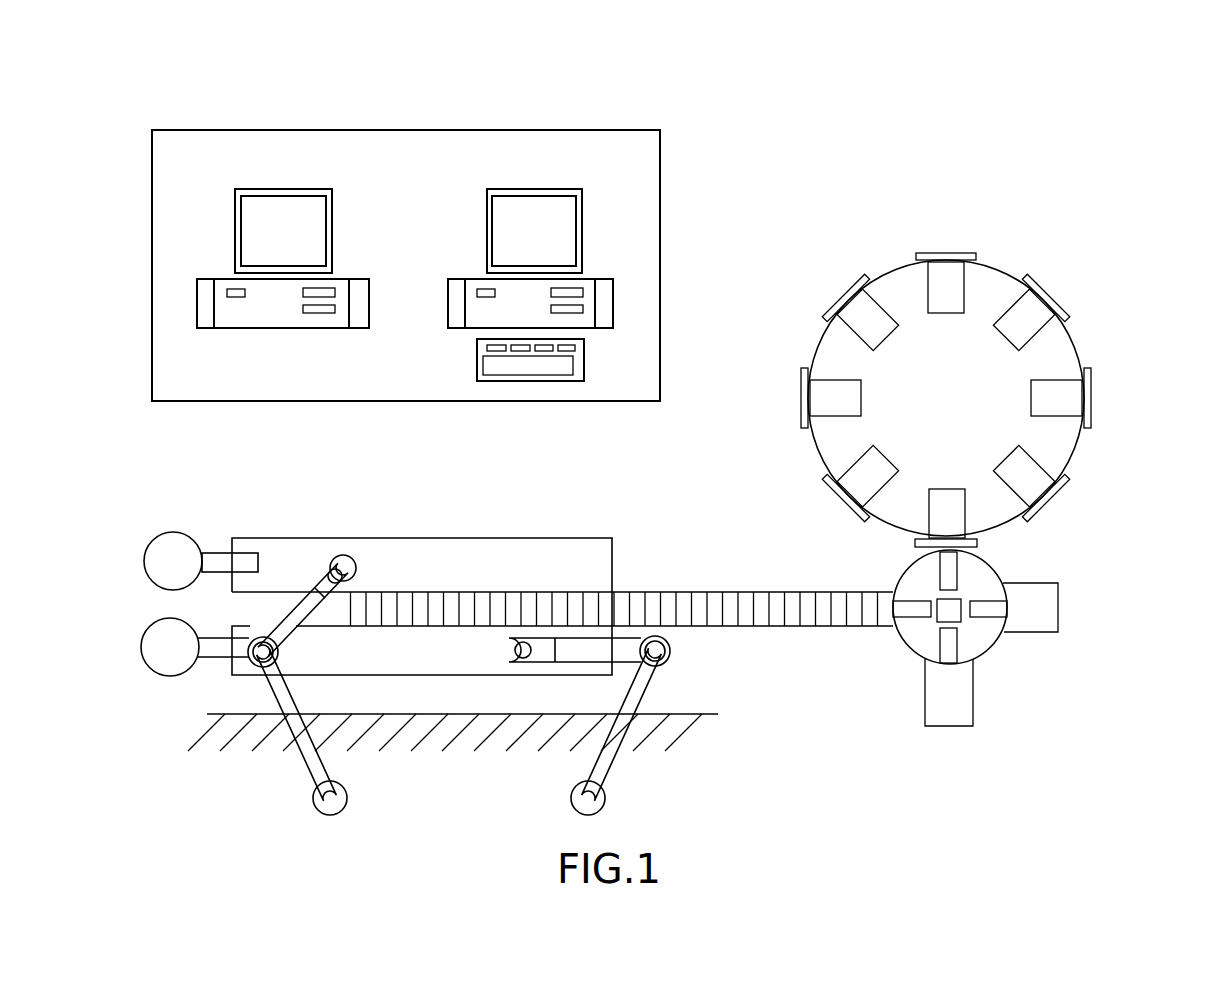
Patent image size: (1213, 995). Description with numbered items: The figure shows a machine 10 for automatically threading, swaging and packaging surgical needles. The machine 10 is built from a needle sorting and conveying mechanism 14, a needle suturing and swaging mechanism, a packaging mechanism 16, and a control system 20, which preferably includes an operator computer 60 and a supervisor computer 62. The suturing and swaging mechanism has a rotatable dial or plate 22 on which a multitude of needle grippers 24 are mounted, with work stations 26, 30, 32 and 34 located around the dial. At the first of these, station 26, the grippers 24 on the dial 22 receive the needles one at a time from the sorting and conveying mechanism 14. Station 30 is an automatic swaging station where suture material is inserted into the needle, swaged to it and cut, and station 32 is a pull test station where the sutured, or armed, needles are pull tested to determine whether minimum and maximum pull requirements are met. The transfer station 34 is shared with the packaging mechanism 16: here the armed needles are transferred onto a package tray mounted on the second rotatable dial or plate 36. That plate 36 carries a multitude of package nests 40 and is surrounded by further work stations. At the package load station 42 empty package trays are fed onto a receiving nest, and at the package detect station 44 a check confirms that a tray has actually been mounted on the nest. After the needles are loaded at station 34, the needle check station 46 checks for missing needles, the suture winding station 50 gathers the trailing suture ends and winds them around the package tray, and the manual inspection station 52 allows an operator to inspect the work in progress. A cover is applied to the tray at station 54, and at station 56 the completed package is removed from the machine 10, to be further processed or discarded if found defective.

The machine 10 is at (862, 151).
The needle sorting and conveying mechanism 14 is at (851, 756).
The packaging mechanism 16 is at (1105, 217).
The control system 20 is at (308, 120).
The rotatable dial or plate 22 is at (980, 643).
The needle grippers 24 is at (998, 611).
The work station 26 is at (883, 637).
The automatic swaging station 30 is at (982, 706).
The pull test station 32 is at (1018, 570).
The transfer station 34 is at (883, 552).
The rotatable dial or plate 36 is at (961, 412).
The package nests 40 is at (1005, 342).
The package load station 42 is at (781, 408).
The package detect station 44 is at (828, 511).
The needle check station 46 is at (1071, 503).
The suture winding station 50 is at (1113, 390).
The manual inspection station 52 is at (1064, 293).
The cover application station 54 is at (949, 242).
The package removal station 56 is at (830, 287).
The operator computer 60 is at (249, 343).
The supervisor computer 62 is at (463, 194).